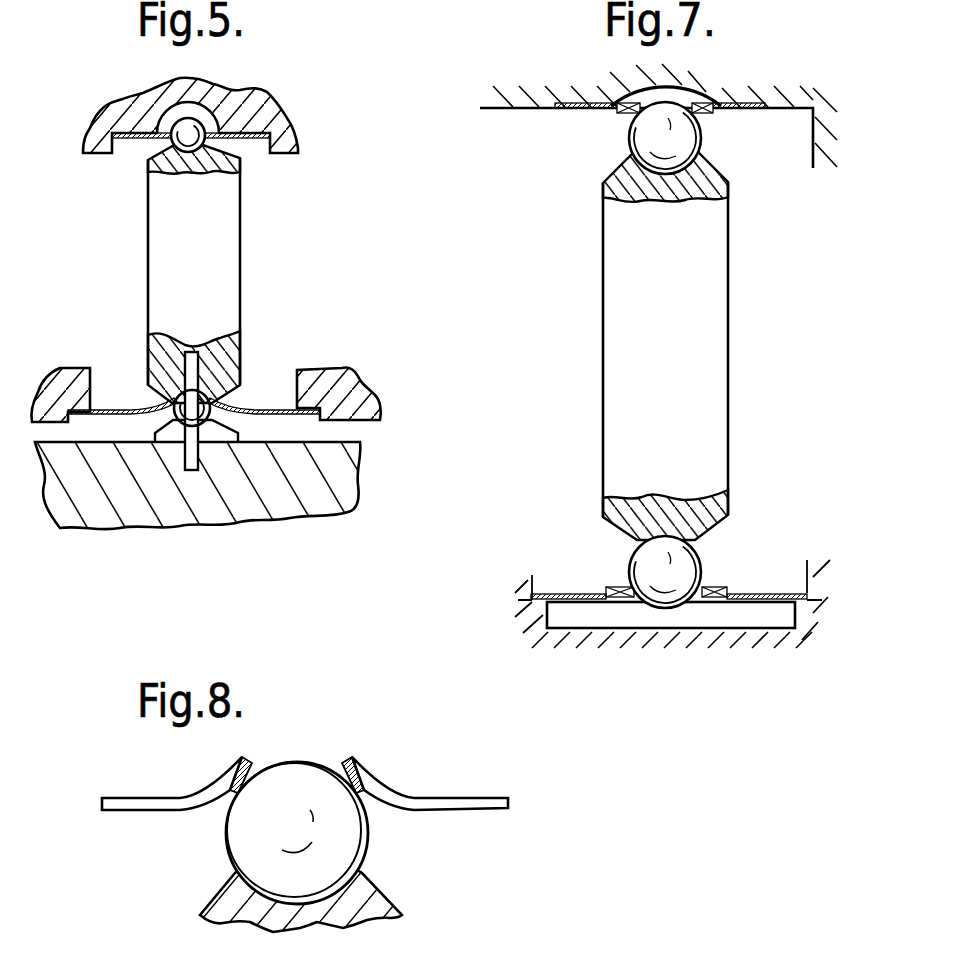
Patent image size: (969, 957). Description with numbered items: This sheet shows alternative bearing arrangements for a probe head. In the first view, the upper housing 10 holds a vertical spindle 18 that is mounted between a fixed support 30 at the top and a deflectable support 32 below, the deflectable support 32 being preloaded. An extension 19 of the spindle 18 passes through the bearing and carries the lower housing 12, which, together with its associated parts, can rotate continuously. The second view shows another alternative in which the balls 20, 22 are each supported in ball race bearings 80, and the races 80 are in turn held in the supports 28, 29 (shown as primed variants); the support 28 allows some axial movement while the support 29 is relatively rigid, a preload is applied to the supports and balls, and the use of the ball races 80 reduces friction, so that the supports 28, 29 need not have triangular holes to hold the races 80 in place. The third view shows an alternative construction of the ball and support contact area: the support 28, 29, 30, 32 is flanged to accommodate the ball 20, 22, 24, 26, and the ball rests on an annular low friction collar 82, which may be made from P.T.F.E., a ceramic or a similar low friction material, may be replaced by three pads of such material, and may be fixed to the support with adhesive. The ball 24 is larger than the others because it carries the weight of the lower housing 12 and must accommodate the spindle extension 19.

In FIG. 5, the upper housing 10 is at (253, 103).
In FIG. 5, the lower housing 12 is at (328, 483).
In FIG. 7, the lower housing 12 is at (758, 92).
In FIG. 5, the vertical spindle 18 is at (210, 254).
In FIG. 5, the spindle extension 19 is at (236, 338).
In FIG. 7, the ball 20 is at (690, 572).
In FIG. 8, the ball 20 is at (412, 833).
In FIG. 7, the ball 22 is at (688, 142).
In FIG. 8, the ball 22 is at (412, 833).
In FIG. 8, the ball 24 is at (412, 833).
In FIG. 8, the ball 26 is at (337, 851).
In FIG. 7, the support 28 is at (557, 592).
In FIG. 8, the support 28 is at (364, 781).
In FIG. 7, the support 29 is at (566, 111).
In FIG. 8, the support 29 is at (364, 781).
In FIG. 5, the support 30 is at (250, 137).
In FIG. 8, the support 30 is at (364, 781).
In FIG. 5, the support 32 is at (273, 405).
In FIG. 8, the support 32 is at (440, 797).
In FIG. 7, the ball race bearing 80 is at (627, 114).
In FIG. 8, the annular low friction collar 82 is at (250, 770).